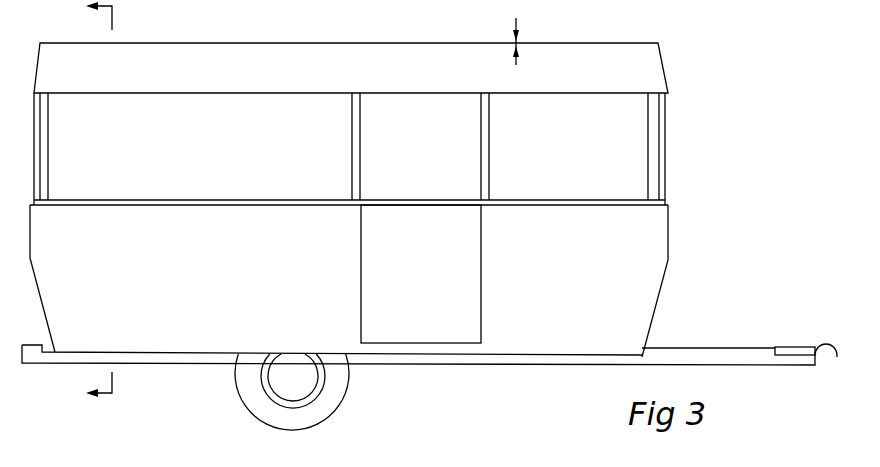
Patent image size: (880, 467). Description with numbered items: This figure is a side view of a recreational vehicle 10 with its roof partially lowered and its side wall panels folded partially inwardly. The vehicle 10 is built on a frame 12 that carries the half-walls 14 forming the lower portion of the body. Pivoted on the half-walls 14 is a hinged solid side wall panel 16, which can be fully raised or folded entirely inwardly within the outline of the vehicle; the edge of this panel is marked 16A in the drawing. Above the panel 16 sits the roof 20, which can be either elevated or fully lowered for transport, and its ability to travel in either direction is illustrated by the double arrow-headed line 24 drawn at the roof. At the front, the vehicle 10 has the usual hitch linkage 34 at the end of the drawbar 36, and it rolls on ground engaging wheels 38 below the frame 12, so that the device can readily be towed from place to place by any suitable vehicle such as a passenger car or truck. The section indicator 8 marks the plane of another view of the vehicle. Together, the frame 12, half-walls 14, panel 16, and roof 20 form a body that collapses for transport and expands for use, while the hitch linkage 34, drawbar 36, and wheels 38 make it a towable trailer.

The section line 8- 8 is at (87, 205).
The recreational vehicle 10 is at (689, 285).
The frame 12 is at (586, 364).
The half-walls 14 is at (197, 288).
The solid side wall panel 16 is at (618, 145).
The window frame 16A is at (665, 166).
The roof 20 is at (663, 66).
The double arrow-headed line 24 is at (519, 31).
The hitch linkage 34 is at (827, 343).
The drawbar 36 is at (731, 348).
The ground engaging wheels 38 is at (283, 430).